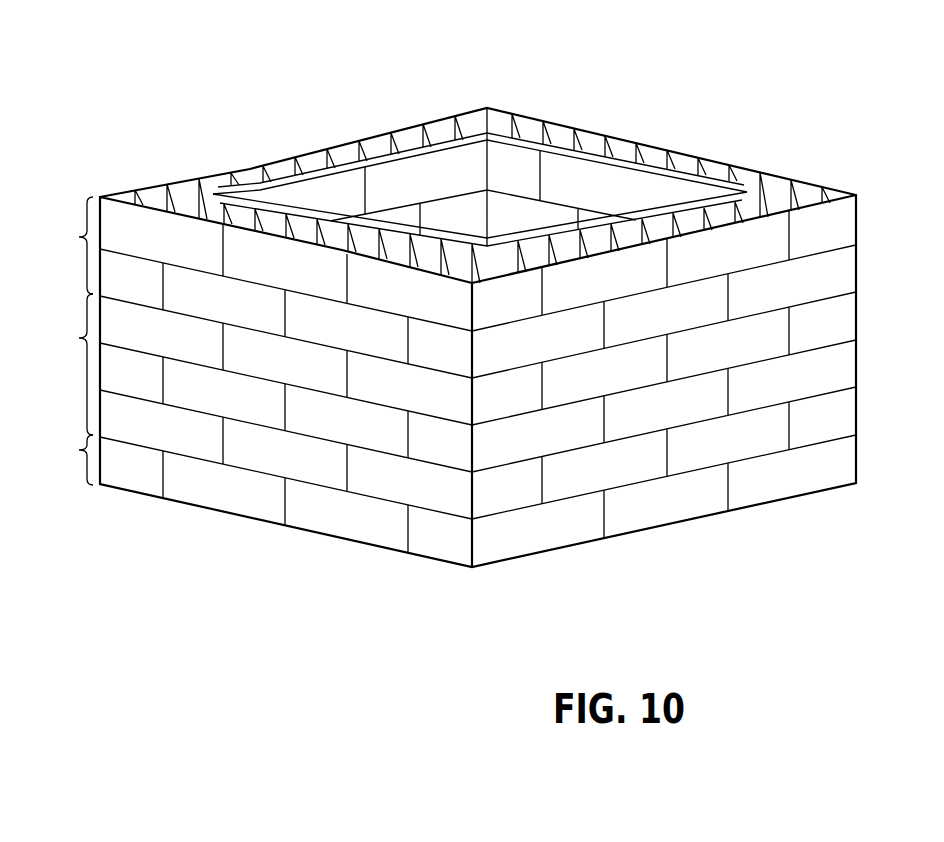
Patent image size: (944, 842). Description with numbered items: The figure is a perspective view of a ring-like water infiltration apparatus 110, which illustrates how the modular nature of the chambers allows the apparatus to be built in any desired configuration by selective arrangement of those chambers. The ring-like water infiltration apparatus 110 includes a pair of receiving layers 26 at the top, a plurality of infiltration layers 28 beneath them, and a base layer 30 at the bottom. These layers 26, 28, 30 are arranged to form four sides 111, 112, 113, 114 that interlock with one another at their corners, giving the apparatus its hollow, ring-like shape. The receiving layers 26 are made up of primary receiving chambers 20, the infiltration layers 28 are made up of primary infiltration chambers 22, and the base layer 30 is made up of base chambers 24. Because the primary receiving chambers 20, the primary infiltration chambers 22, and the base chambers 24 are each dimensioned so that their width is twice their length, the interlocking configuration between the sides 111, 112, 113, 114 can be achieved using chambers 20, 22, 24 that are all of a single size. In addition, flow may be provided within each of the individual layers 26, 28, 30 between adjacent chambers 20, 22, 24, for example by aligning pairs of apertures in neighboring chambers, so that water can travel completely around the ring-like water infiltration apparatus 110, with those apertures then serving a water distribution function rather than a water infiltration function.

The ring-like water infiltration apparatus 110 is at (116, 111).
The side 114 is at (345, 136).
The side 113 is at (631, 137).
The side 111 is at (311, 537).
The side 112 is at (667, 532).
The primary receiving chamber 20 is at (277, 277).
The primary infiltration chamber 22 is at (295, 368).
The base chamber 24 is at (215, 498).
The receiving layer 26 is at (69, 245).
The infiltration layer 28 is at (69, 364).
The base layer 30 is at (69, 460).